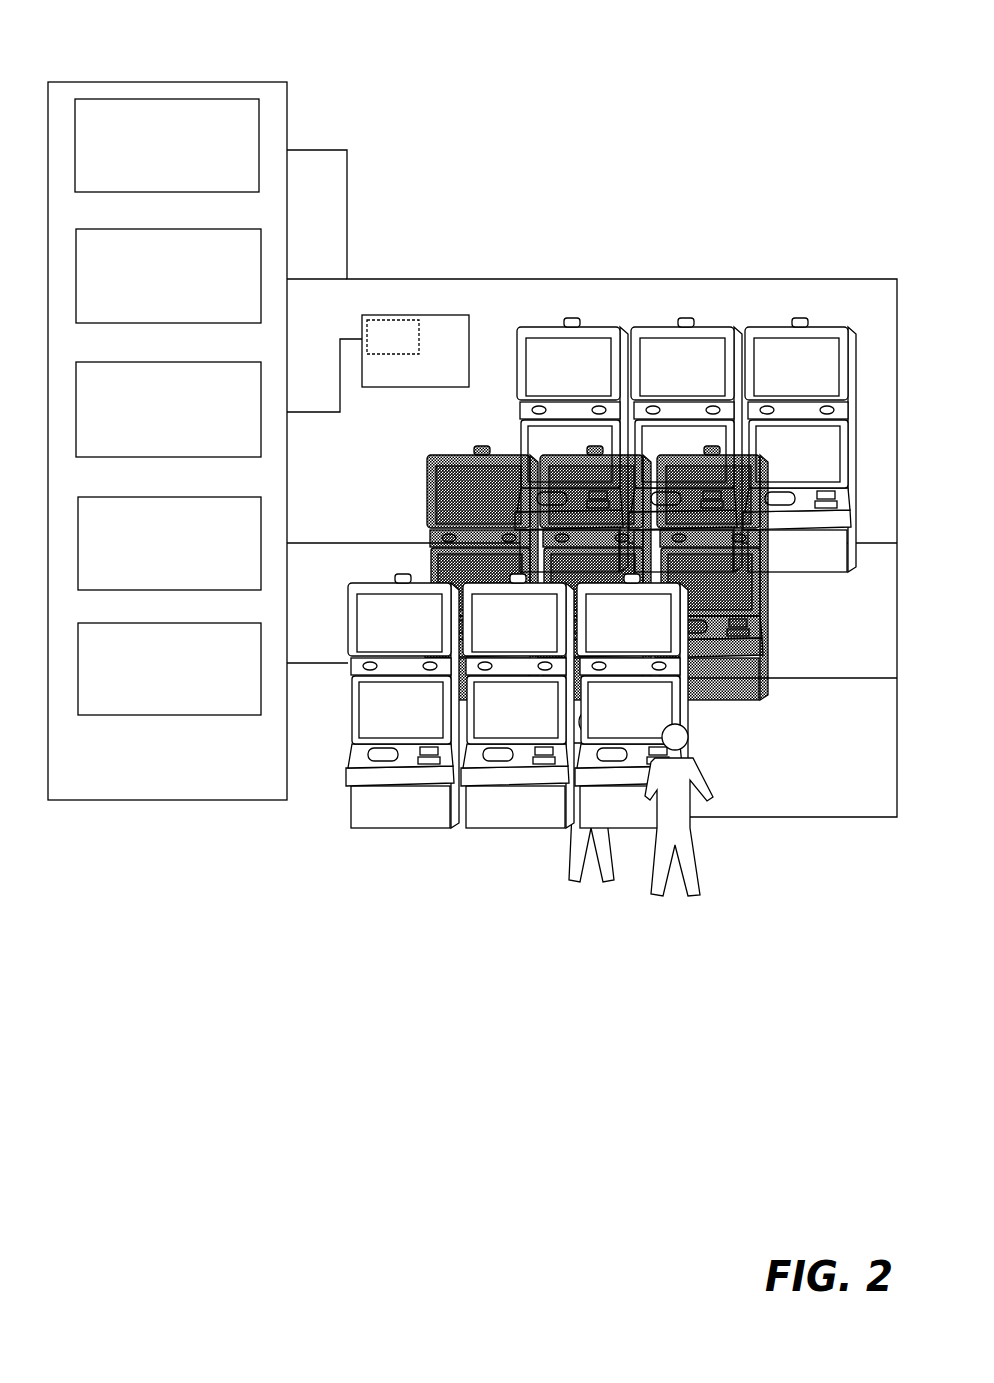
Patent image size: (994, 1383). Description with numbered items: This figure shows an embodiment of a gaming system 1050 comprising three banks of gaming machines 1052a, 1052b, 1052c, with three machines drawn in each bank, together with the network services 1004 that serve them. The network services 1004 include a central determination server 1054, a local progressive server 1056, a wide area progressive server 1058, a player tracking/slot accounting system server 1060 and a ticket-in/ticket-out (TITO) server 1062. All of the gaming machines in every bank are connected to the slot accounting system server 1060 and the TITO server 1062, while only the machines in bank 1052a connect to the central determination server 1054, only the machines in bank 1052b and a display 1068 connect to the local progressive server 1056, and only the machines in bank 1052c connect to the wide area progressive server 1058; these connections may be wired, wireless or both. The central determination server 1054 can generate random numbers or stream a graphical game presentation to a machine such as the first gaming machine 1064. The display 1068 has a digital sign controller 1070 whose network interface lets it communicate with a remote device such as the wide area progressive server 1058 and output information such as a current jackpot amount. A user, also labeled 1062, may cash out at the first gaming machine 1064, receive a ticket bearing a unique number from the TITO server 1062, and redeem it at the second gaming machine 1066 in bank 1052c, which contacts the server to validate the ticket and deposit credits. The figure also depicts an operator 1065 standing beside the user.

The gaming system 1050 is at (237, 40).
The network services 1004 is at (277, 792).
The ticket-in/ticket-out (TITO) server 1062 is at (252, 183).
The player tracking/slot accounting system server 1060 is at (254, 314).
The wide area progressive server 1058 is at (252, 448).
The local progressive server 1056 is at (253, 583).
The central determination server 1054 is at (255, 708).
The display 1068 is at (463, 384).
The digital sign controller 1070 is at (415, 347).
The bank of gaming machines 1052c is at (537, 312).
The bank of gaming machines 1052b is at (445, 443).
The bank of gaming machines 1052a is at (384, 572).
The second gaming machine 1066 is at (820, 380).
The first gaming machine 1064 is at (648, 633).
The operator 1065 is at (676, 836).